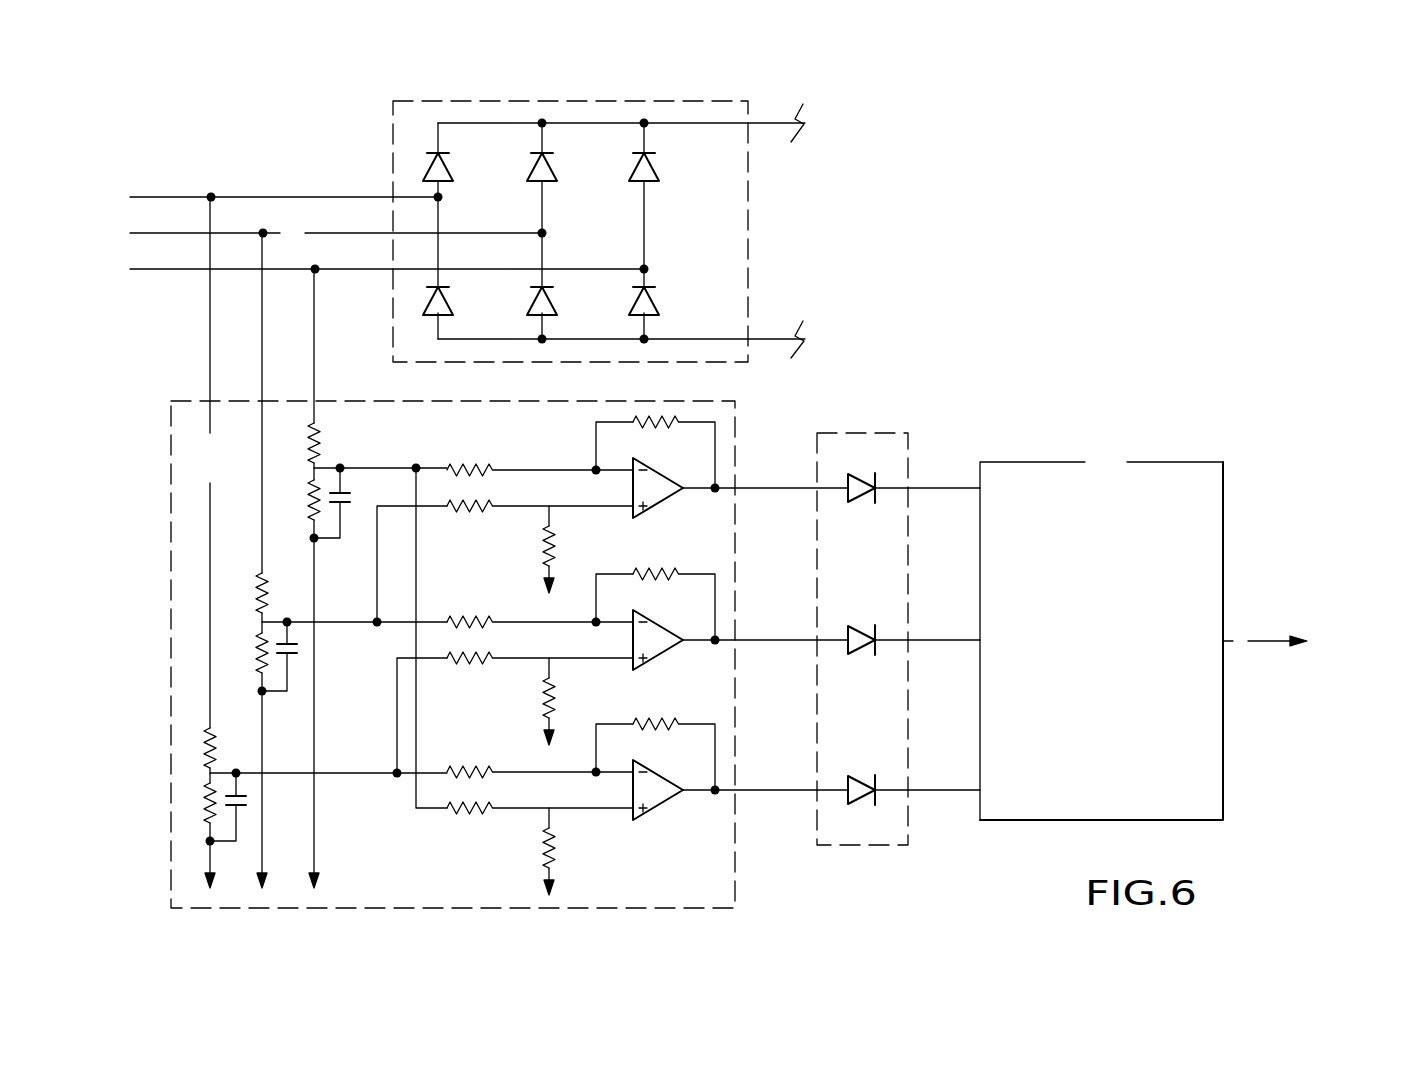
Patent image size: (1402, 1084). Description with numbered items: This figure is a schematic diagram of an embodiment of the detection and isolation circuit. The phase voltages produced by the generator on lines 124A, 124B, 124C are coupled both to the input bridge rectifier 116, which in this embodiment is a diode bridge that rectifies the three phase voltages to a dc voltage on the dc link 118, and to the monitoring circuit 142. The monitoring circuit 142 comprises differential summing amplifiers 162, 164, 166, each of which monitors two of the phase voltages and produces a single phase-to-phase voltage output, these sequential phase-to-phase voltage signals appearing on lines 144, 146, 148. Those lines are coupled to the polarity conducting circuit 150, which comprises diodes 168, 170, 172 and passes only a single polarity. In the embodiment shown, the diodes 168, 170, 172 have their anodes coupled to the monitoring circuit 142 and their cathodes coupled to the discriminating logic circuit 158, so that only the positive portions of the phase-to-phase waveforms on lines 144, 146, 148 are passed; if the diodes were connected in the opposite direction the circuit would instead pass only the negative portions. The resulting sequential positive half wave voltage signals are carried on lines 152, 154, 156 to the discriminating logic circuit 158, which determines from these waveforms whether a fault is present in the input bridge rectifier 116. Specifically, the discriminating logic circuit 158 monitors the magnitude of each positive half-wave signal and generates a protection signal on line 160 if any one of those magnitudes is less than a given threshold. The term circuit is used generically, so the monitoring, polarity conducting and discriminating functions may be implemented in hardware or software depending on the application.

The phase line 124A is at (186, 197).
The phase line 124B is at (278, 233).
The phase line 124C is at (381, 268).
The input bridge rectifier 116 is at (748, 252).
The dc link 118 is at (765, 125).
The monitoring circuit 142 is at (737, 403).
The line 144 is at (760, 488).
The line 146 is at (758, 640).
The line 148 is at (754, 790).
The polarity conducting circuit 150 is at (862, 432).
The line 152 is at (934, 488).
The line 154 is at (930, 640).
The line 156 is at (930, 790).
The discriminating logic circuit 158 is at (1162, 462).
The line 160 is at (1250, 640).
The differential summing amplifier 162 is at (652, 510).
The differential summing amplifier 164 is at (652, 661).
The differential summing amplifier 166 is at (652, 812).
The diode 168 is at (860, 500).
The diode 170 is at (860, 650).
The diode 172 is at (858, 800).